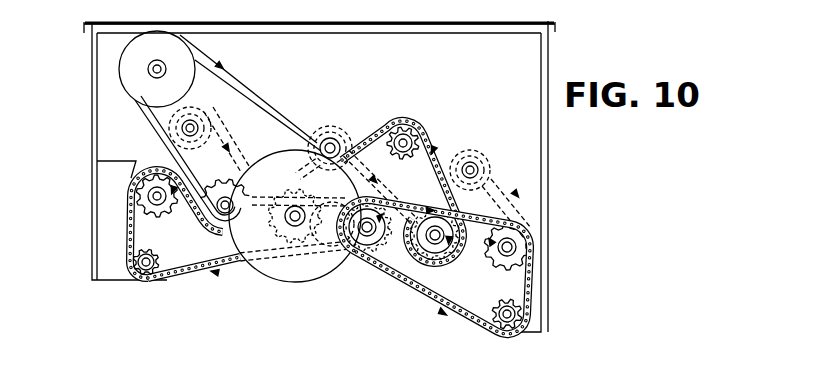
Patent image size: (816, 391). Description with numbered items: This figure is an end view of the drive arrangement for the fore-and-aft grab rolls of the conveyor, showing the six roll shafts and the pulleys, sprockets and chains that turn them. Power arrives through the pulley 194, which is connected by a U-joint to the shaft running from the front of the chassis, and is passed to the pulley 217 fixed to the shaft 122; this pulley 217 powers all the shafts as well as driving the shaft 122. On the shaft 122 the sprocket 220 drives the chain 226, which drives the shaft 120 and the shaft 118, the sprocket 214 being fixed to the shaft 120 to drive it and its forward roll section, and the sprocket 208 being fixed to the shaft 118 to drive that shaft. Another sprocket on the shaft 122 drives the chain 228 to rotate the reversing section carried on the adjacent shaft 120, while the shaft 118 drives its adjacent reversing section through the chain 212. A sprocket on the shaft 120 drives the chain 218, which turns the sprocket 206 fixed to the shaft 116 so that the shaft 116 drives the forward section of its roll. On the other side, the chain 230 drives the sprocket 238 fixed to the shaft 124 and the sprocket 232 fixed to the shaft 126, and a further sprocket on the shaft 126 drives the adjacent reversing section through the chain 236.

The pulley 194 is at (130, 54).
The chain 236 is at (209, 113).
The chain 228 is at (330, 125).
The sprocket 220 is at (322, 141).
The chain 226 is at (369, 132).
The chain 212 is at (485, 158).
The sprocket 208 is at (458, 218).
The sprocket 232 is at (126, 176).
The shaft 126 is at (148, 194).
The chain 230 is at (126, 231).
The sprocket 238 is at (203, 228).
The shaft 124 is at (224, 213).
The pulley 217 is at (283, 280).
The shaft 122 is at (296, 226).
The sprocket 214 is at (371, 242).
The shaft 120 is at (370, 236).
The shaft 118 is at (441, 242).
The sprocket 206 is at (512, 231).
The shaft 116 is at (517, 248).
The chain 218 is at (528, 288).